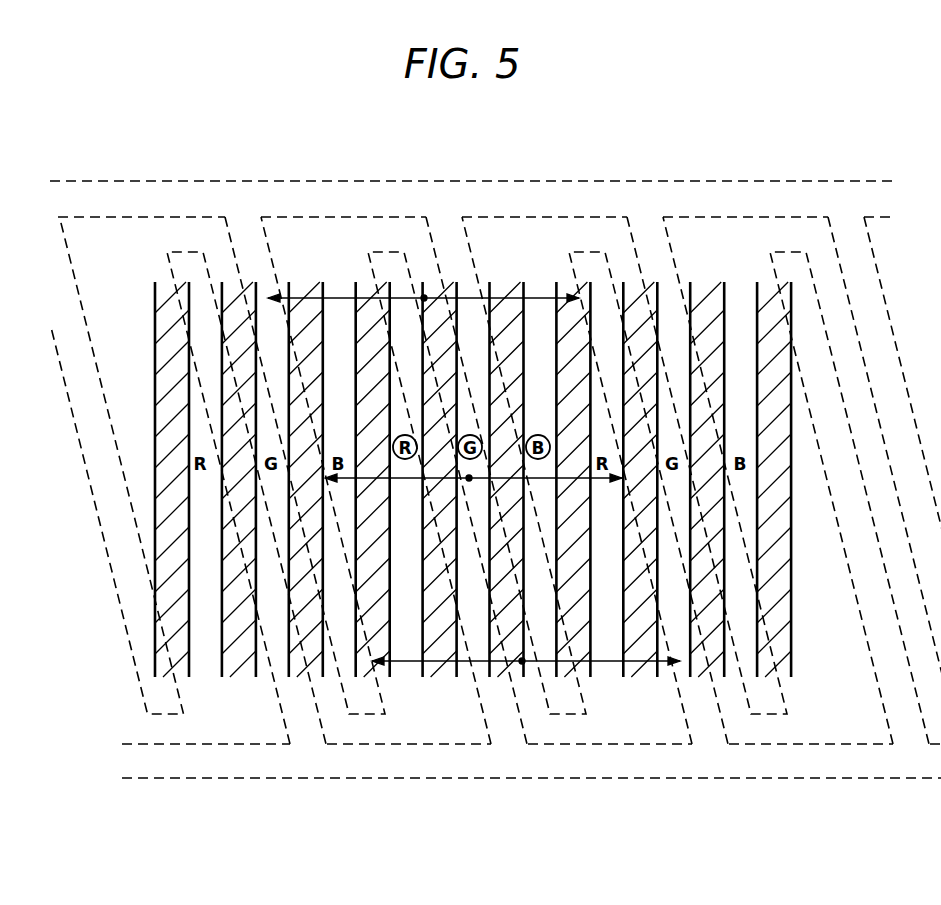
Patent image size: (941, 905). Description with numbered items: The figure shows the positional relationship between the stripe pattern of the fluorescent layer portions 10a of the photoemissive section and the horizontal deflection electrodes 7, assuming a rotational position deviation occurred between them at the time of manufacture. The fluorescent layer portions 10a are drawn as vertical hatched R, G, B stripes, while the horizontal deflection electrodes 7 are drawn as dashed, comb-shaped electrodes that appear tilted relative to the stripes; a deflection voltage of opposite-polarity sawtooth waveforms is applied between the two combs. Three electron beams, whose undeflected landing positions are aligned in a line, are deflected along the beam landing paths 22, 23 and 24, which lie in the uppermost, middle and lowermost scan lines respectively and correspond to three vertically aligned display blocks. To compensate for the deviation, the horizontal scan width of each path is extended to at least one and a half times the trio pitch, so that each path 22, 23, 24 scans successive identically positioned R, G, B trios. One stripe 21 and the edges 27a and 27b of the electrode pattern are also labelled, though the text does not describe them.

The horizontal deflection electrodes 7 is at (836, 180).
The fluorescent layer portions 10a is at (743, 290).
The phosphor stripe 21 is at (786, 291).
The beam landing path 22 is at (343, 296).
The beam landing path 23 is at (412, 480).
The beam landing path 24 is at (478, 664).
The upper edge line 27a is at (888, 181).
The lower edge line 27b is at (917, 780).